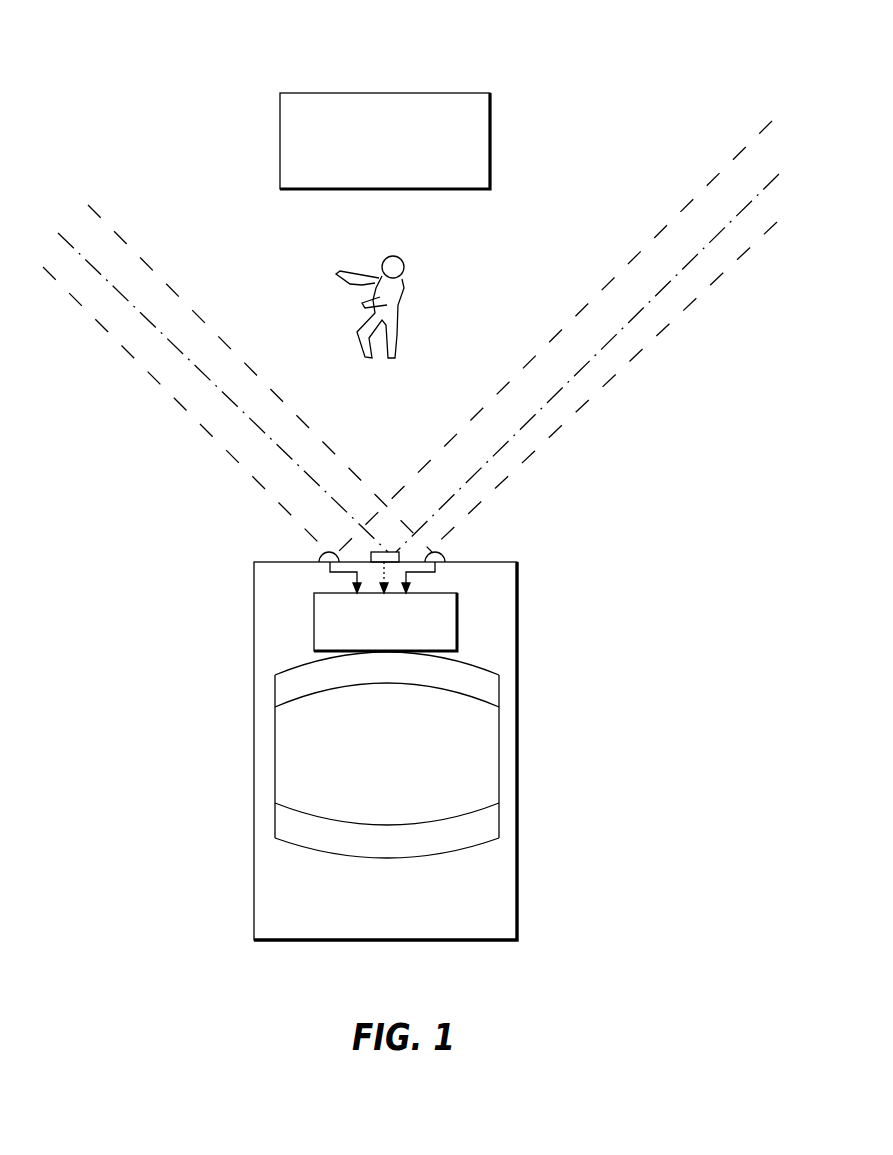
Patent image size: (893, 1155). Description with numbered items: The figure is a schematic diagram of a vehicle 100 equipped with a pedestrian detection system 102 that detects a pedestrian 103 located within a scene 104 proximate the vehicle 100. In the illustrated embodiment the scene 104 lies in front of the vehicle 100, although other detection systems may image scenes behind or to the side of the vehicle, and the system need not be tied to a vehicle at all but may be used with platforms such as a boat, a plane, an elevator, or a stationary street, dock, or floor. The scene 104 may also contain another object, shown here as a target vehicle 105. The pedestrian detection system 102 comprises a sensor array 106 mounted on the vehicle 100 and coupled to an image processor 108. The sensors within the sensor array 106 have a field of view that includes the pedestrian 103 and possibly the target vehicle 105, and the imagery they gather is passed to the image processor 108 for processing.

The vehicle 100 is at (519, 649).
The pedestrian detection system 102 is at (466, 550).
The pedestrian 103 is at (321, 299).
The scene 104 is at (689, 58).
The target vehicle 105 is at (430, 93).
The sensor array 106 is at (302, 550).
The image processor 108 is at (459, 613).